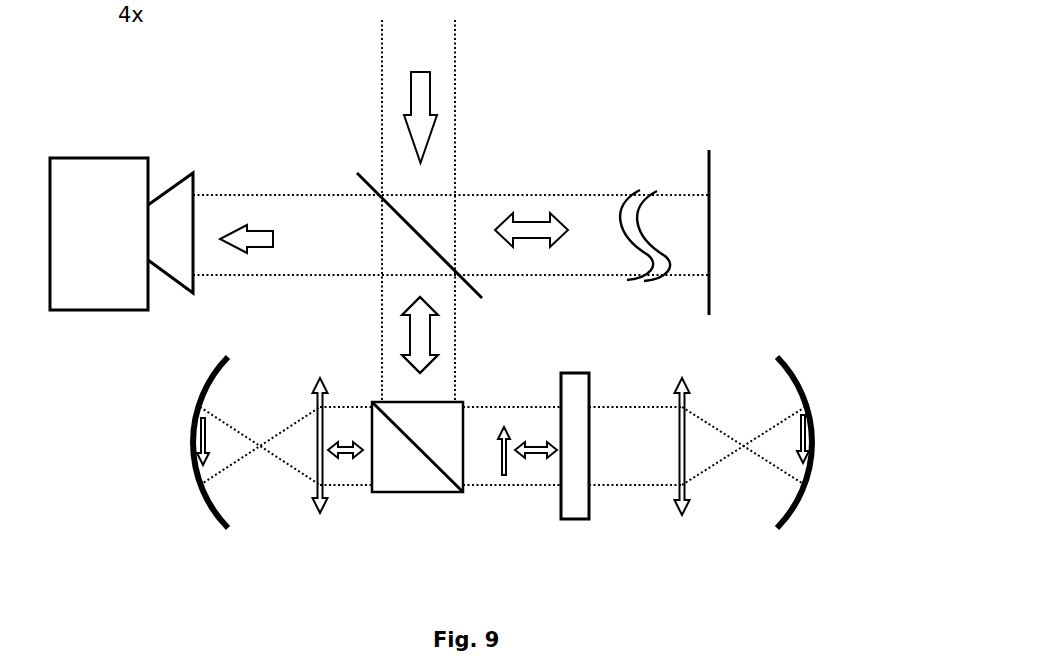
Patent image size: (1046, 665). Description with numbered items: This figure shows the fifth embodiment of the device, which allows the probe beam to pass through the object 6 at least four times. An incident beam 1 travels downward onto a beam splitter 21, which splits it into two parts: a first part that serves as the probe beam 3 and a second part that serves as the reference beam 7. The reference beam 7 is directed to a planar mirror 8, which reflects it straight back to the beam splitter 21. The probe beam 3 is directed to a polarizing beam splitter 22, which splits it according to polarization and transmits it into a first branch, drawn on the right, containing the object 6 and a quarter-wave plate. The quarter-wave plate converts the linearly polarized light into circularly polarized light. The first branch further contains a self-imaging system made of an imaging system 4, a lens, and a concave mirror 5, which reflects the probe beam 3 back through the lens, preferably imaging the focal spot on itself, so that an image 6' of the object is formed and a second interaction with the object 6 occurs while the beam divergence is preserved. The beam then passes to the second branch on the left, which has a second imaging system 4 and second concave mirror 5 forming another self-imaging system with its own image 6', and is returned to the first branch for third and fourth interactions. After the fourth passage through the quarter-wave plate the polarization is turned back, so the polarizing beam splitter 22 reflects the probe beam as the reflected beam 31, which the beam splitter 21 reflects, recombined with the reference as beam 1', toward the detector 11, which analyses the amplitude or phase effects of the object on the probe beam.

The incident beam 1 is at (465, 95).
The recombined beam 1' is at (232, 173).
The probe beam 3 is at (408, 357).
The reflected first part beam 31 is at (408, 315).
The imaging system 4 is at (318, 493).
The concave mirror 5 is at (196, 470).
The object 6 is at (512, 488).
The image of an object 6' is at (504, 431).
The reference beam 7 is at (532, 230).
The planar mirror 8 is at (710, 258).
The detector 11 is at (148, 310).
The beam splitter 21 is at (432, 257).
The polarizing beam splitter 22 is at (410, 493).